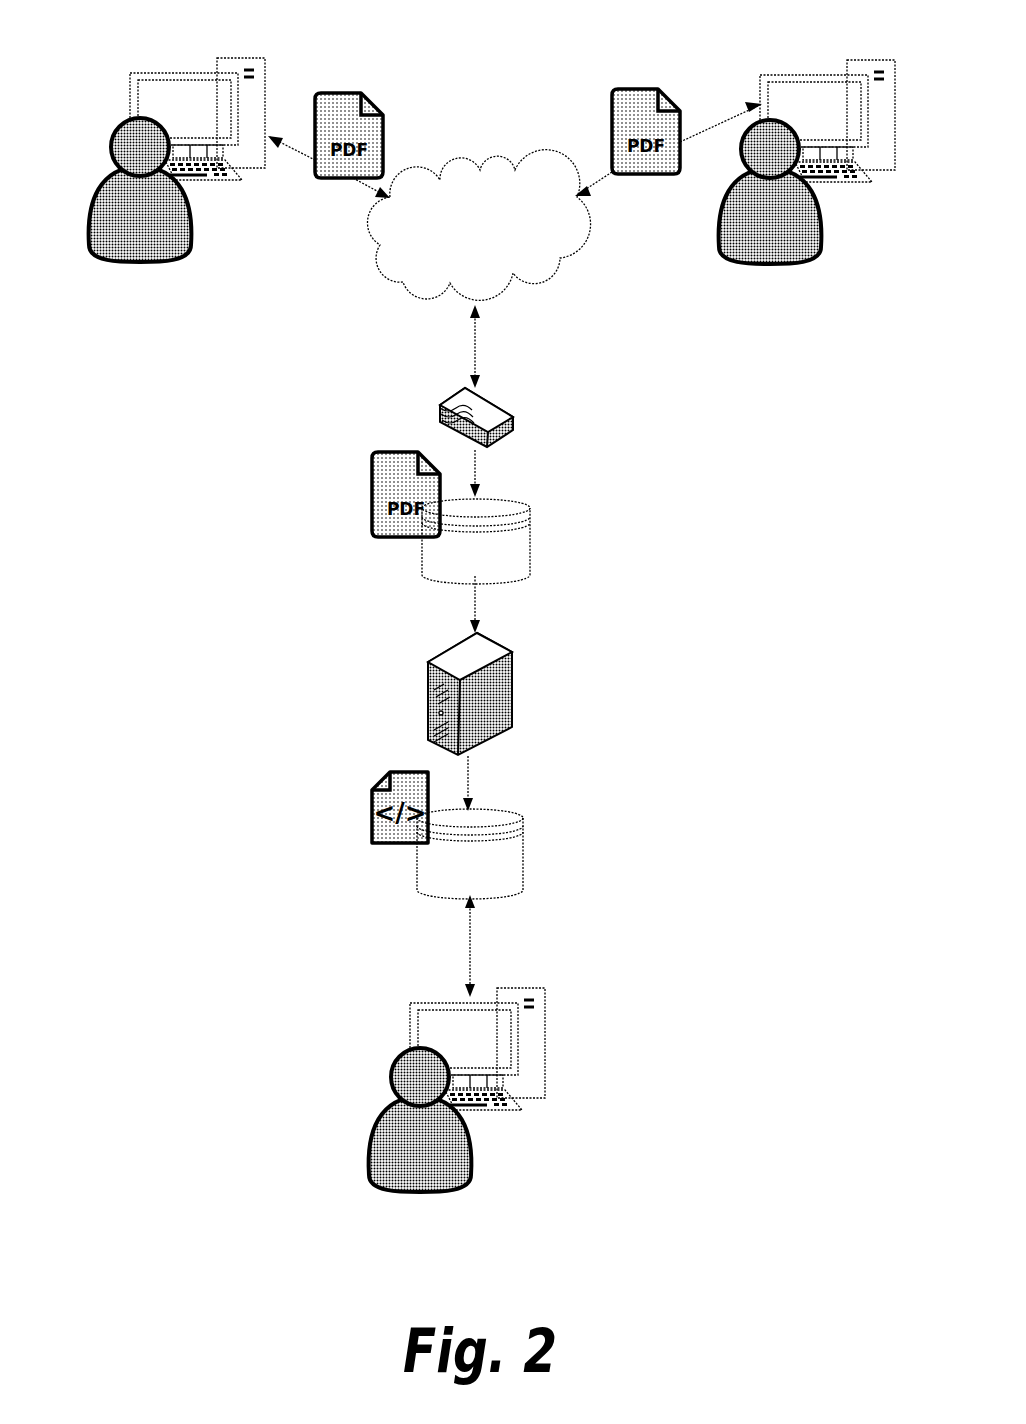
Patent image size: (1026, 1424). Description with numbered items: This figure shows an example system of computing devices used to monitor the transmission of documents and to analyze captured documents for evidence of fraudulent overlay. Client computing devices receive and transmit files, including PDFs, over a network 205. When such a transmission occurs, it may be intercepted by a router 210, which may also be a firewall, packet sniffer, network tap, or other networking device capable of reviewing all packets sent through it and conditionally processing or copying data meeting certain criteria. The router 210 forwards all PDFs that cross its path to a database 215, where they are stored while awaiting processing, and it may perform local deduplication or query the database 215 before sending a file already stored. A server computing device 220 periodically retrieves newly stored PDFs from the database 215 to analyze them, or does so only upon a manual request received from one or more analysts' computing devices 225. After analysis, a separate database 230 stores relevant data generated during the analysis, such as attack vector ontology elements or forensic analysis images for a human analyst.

The network 205 is at (498, 244).
The router 210 is at (440, 410).
The database 215 is at (499, 567).
The server computing device 220 is at (512, 652).
The analysts' computing devices 225 is at (412, 1032).
The separate database 230 is at (492, 880).